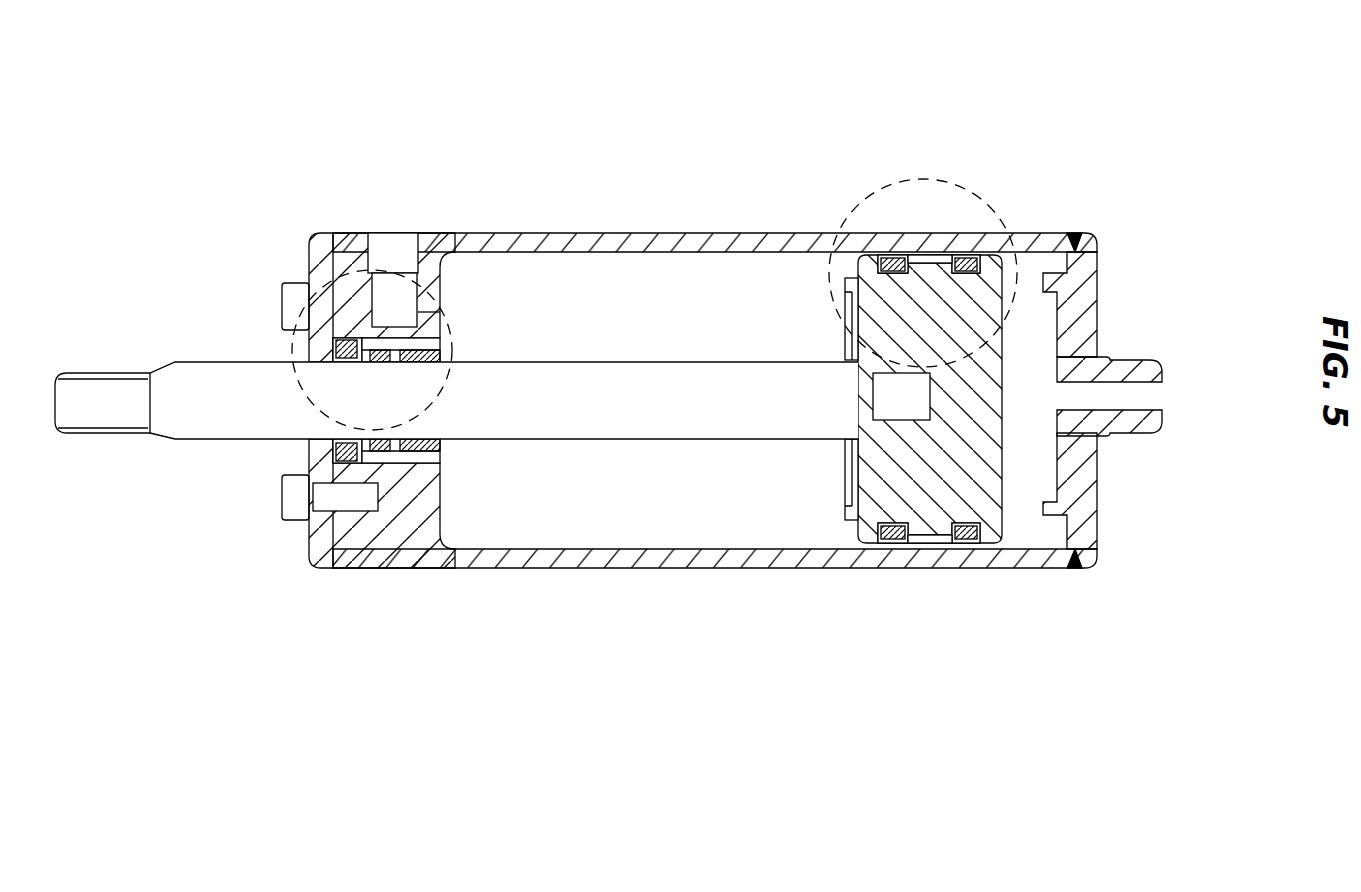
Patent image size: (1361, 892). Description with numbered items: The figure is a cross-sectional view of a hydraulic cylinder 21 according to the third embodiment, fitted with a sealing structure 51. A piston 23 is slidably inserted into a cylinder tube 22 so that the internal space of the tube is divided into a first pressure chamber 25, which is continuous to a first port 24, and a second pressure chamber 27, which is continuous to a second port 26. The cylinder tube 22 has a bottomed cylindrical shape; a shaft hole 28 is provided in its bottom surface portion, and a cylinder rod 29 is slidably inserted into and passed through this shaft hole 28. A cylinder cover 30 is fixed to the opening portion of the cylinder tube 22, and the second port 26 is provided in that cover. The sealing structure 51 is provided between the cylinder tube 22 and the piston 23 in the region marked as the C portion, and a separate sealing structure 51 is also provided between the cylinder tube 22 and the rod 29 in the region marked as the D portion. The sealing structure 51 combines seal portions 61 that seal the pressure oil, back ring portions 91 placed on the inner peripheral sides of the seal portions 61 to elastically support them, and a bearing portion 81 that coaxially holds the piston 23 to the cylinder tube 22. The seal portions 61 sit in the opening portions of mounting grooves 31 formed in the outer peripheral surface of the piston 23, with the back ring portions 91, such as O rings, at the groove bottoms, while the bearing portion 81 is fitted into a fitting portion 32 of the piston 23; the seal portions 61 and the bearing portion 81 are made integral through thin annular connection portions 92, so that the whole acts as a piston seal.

The hydraulic cylinder 21 is at (558, 232).
The cylinder tube 22 is at (612, 560).
The piston 23 is at (935, 532).
The first port 24 is at (398, 248).
The first pressure chamber 25 is at (680, 313).
The second port 26 is at (1145, 400).
The second pressure chamber 27 is at (1036, 404).
The shaft hole 28 is at (417, 527).
The cylinder rod 29 is at (223, 432).
The cylinder cover 30 is at (1100, 472).
The mounting grooves 31 is at (307, 527).
The fitting portion 32 is at (375, 453).
The sealing structure 51 is at (335, 340).
The seal portions 61 is at (365, 348).
The bearing portion 81 is at (392, 325).
The back ring portions 91 is at (390, 350).
The connection portions 92 is at (360, 343).
The C portion C is at (1007, 217).
The D portion D is at (300, 348).